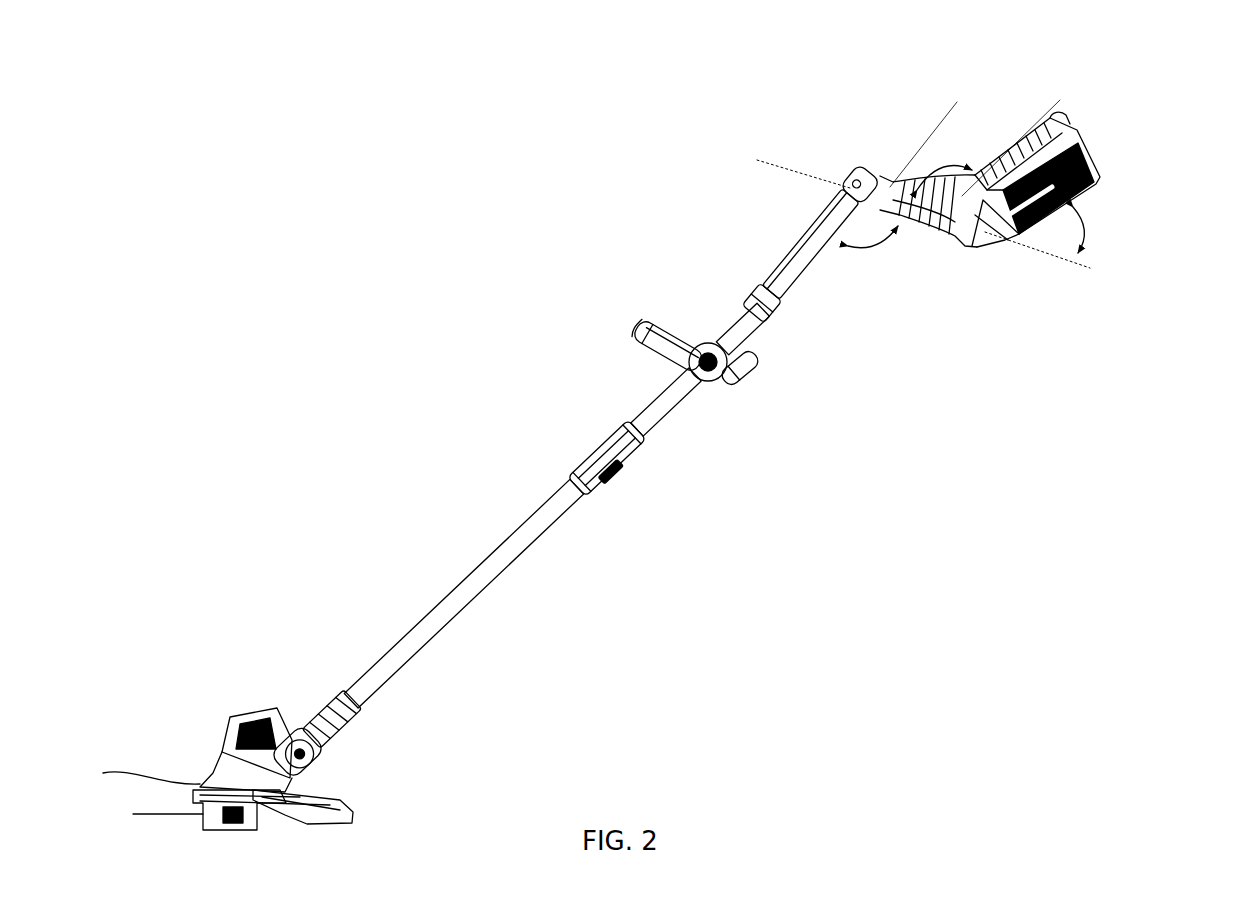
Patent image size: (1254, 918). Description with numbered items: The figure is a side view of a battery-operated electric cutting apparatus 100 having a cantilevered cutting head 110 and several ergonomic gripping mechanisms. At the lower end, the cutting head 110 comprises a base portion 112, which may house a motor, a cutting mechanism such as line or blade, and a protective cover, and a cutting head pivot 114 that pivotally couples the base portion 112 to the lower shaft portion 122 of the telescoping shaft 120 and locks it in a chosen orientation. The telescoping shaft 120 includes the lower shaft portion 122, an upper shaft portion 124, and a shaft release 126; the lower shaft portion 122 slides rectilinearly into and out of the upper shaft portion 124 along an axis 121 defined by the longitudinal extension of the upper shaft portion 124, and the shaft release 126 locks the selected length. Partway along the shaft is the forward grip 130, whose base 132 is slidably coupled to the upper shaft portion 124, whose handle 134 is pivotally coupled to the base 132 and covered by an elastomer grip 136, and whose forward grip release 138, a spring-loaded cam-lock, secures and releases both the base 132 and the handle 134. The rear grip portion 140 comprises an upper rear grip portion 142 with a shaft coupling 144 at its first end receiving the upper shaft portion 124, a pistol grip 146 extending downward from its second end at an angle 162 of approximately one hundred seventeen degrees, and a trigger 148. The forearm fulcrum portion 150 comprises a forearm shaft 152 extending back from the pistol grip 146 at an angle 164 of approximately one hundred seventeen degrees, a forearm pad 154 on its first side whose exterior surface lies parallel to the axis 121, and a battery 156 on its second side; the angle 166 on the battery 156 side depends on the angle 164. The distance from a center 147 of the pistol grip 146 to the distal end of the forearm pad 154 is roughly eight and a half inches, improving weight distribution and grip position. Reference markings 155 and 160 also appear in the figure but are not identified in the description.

The battery-operated electric cutting apparatus 100 is at (358, 154).
The cutting head 110 is at (200, 700).
The base portion 112 is at (236, 743).
The cutting head pivot 114 is at (299, 746).
The telescoping shaft 120 is at (400, 482).
The axis 121 is at (927, 132).
The lower shaft portion 122 is at (440, 624).
The upper shaft portion 124 is at (628, 430).
The shaft release 126 is at (608, 470).
The forward grip 130 is at (555, 264).
The base 132 is at (703, 346).
The handle 134 is at (670, 324).
The grip 136 is at (642, 327).
The forward grip release 138 is at (736, 380).
The rear grip portion 140 is at (690, 180).
The upper rear grip portion 142 is at (768, 283).
The shaft coupling 144 is at (766, 301).
The pistol grip 146 is at (889, 210).
The center 147 is at (762, 161).
The trigger 148 is at (898, 218).
The forearm fulcrum portion 150 is at (1162, 124).
The forearm shaft 152 is at (1066, 121).
The forearm pad 154 is at (1002, 148).
The battery axis reference line 155 is at (1056, 92).
The battery 156 is at (1098, 179).
The angular arrangement 160 is at (996, 303).
The angle 162 is at (873, 247).
The angle 164 is at (944, 172).
The angle 166 is at (1095, 230).